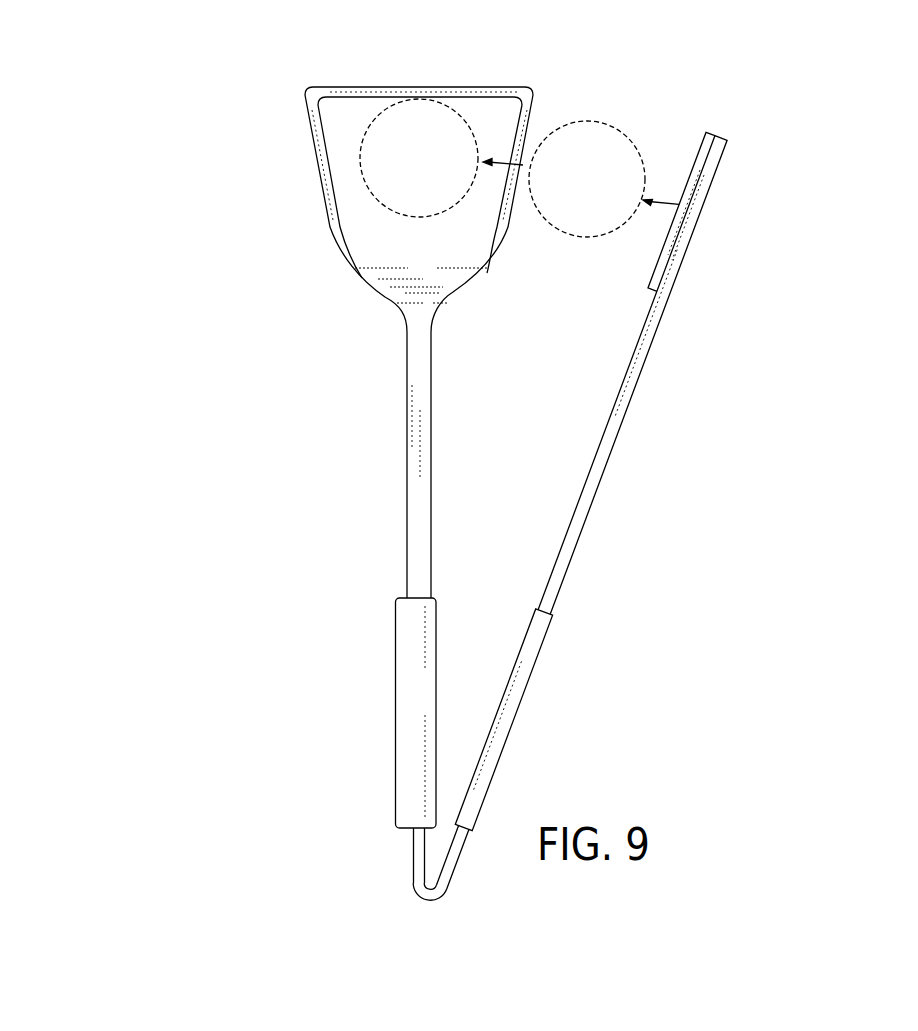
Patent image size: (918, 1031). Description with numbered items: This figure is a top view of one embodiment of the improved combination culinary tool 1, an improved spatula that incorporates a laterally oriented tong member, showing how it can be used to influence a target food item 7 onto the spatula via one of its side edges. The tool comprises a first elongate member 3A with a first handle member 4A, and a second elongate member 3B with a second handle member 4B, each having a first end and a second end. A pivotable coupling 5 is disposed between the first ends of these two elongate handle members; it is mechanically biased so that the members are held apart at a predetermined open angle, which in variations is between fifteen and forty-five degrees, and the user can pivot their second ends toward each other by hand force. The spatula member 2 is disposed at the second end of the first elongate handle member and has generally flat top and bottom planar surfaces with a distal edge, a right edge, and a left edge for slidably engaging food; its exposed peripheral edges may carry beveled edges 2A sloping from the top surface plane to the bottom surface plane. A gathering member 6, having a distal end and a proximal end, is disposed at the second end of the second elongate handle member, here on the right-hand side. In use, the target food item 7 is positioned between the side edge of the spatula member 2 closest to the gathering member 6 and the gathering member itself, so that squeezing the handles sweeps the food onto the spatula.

The improved combination culinary tool 1 is at (134, 163).
The spatula member 2 is at (350, 153).
The beveled edges 2A is at (330, 87).
The first elongate member 3A is at (407, 435).
The second elongate member 3B is at (614, 444).
The first handle member 4A is at (395, 707).
The second handle member 4B is at (511, 726).
The pivotable coupling 5 is at (417, 890).
The gathering member 6 is at (696, 224).
The target food item 7 is at (444, 136).